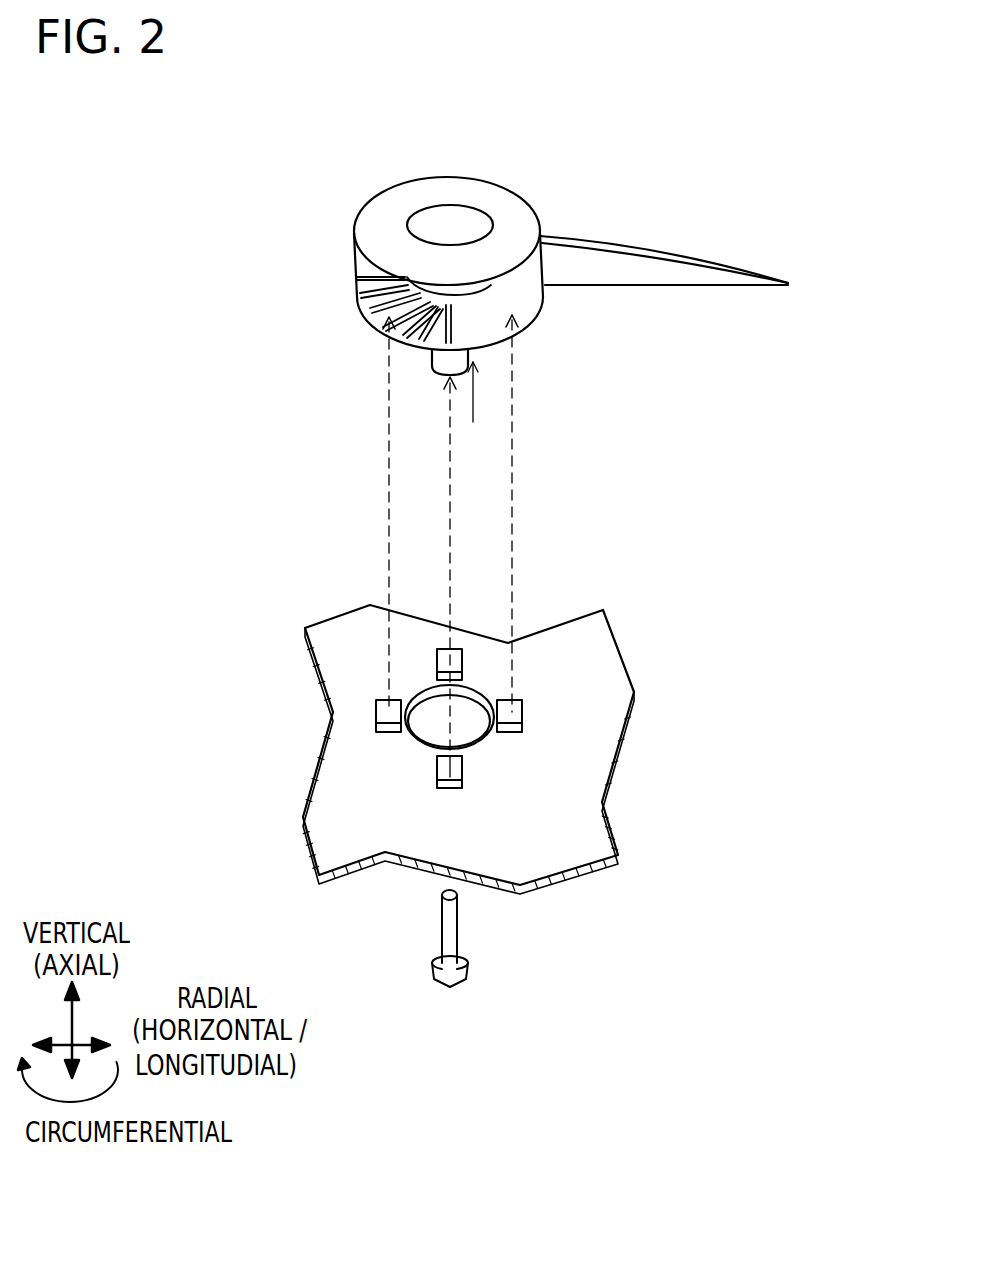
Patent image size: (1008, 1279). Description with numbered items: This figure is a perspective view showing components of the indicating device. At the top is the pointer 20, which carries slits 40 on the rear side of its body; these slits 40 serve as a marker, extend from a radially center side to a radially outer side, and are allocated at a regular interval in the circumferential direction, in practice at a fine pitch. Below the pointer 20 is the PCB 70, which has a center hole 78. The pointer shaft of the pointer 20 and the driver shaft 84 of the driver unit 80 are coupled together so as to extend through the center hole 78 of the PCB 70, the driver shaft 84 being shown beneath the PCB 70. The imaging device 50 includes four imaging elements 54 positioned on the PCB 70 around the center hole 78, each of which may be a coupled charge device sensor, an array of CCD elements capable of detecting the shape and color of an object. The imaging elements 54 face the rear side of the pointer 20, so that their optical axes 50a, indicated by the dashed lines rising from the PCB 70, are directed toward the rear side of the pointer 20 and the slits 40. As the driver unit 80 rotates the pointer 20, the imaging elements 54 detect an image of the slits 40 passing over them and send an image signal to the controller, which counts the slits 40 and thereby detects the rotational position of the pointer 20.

The pointer 20 is at (547, 169).
The slits 40 is at (377, 273).
The optical axes 50a is at (389, 369).
The imaging device 50 is at (545, 717).
The imaging elements 54 is at (462, 657).
The PCB 70 is at (652, 853).
The center hole 78 is at (472, 700).
The driver unit 80 is at (520, 938).
The driver shaft 84 is at (458, 924).